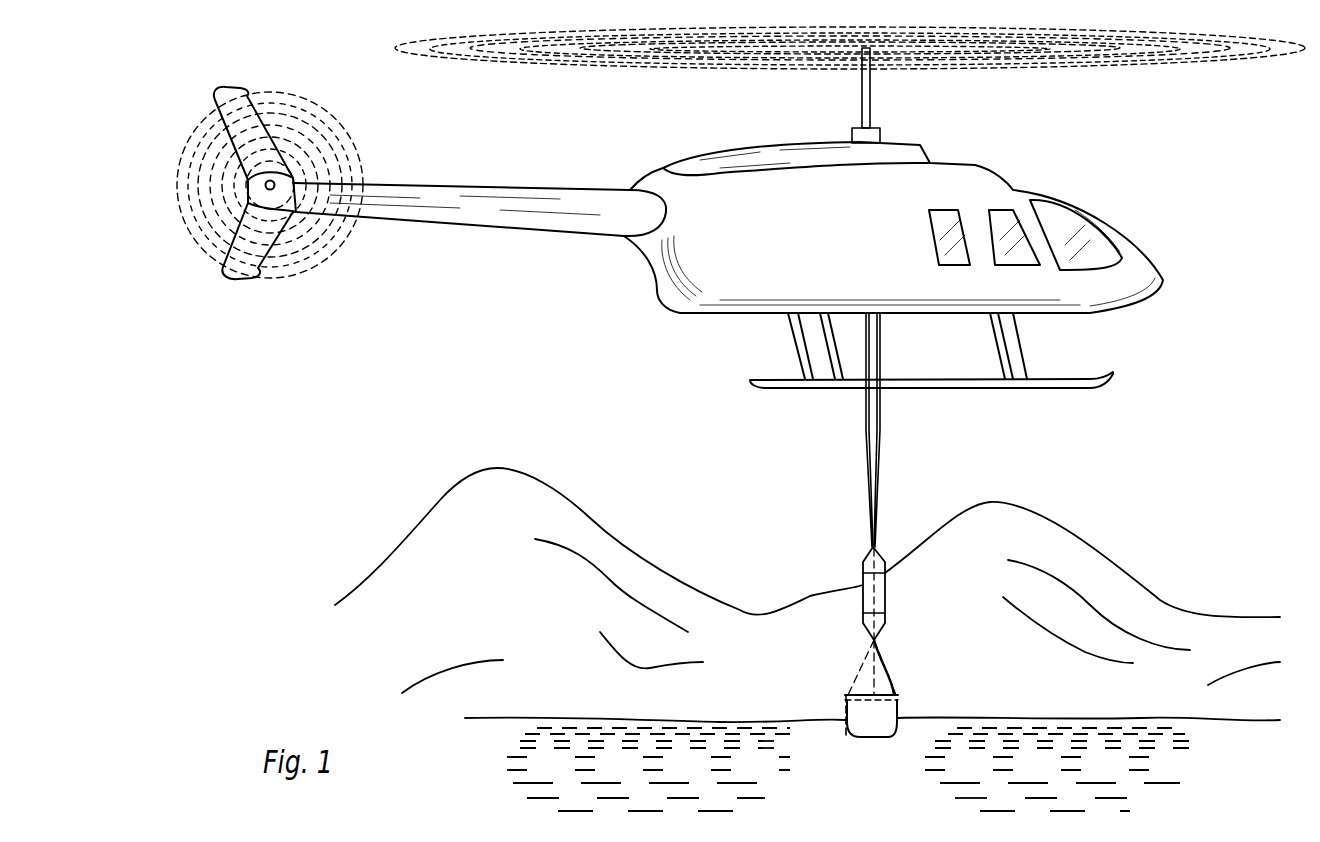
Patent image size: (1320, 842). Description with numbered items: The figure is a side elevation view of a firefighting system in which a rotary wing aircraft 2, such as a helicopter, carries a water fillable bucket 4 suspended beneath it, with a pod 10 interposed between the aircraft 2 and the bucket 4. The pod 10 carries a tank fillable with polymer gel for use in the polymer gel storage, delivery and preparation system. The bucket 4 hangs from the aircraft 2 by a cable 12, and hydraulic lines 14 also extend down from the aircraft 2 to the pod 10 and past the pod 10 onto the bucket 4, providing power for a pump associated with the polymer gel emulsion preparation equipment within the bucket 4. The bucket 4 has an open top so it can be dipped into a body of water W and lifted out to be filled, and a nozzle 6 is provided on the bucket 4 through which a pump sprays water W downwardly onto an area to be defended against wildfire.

The aircraft 2 is at (776, 247).
The bucket 4 is at (893, 705).
The nozzle 6 is at (845, 708).
The pod 10 is at (861, 581).
The cable 12 is at (873, 407).
The hydraulic lines 14 is at (868, 432).
The water W is at (481, 781).